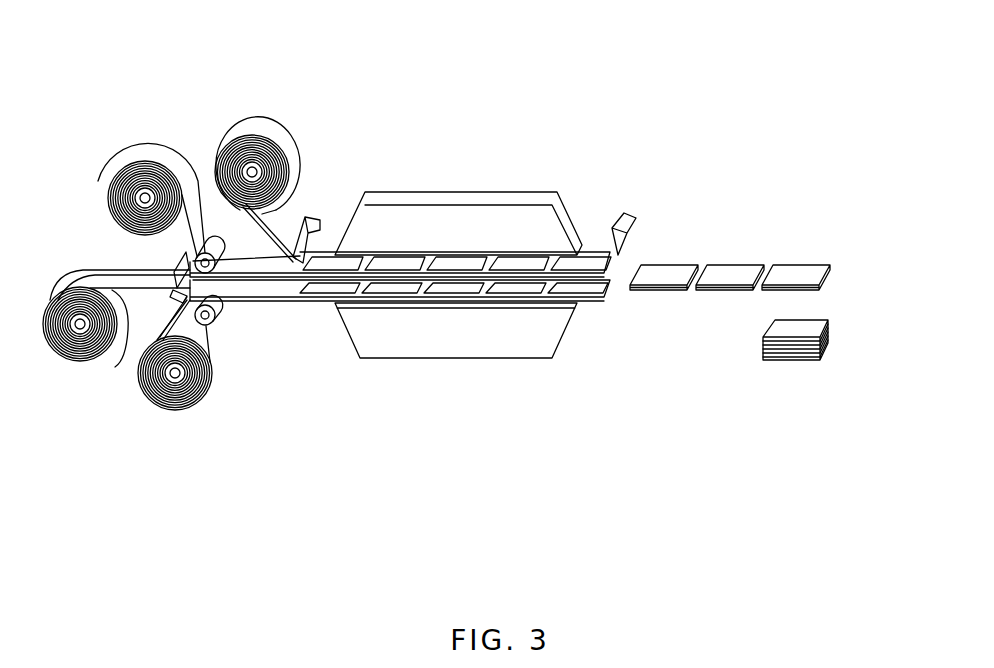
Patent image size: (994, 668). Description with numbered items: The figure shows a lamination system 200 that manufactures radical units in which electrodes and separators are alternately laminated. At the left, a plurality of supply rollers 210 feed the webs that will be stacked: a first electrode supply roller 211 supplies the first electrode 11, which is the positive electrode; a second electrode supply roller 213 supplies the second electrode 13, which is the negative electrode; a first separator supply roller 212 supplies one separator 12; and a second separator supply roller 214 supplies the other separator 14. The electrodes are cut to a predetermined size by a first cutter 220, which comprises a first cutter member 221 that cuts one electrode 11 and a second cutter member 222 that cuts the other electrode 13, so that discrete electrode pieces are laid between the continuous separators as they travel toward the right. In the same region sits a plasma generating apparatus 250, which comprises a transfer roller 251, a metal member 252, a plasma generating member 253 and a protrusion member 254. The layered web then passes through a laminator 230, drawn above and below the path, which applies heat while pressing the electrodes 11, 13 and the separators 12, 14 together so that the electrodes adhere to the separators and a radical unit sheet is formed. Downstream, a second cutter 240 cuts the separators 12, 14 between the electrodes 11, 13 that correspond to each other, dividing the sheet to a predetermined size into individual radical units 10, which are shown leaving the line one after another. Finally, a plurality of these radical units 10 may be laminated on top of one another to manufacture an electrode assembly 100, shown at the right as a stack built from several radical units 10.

The radical unit 10 is at (806, 258).
The first electrode 11 is at (267, 128).
The first separator 12 is at (162, 177).
The second electrode 13 is at (60, 343).
The second separator 14 is at (170, 397).
The electrode assembly 100 is at (898, 300).
The lamination system 200 is at (617, 104).
The supply rollers 210 is at (43, 62).
The first electrode supply roller 211 is at (252, 172).
The first separator supply roller 212 is at (145, 197).
The second electrode supply roller 213 is at (80, 324).
The second separator supply roller 214 is at (173, 373).
The first cutter 220 is at (388, 115).
The first cutter member 221 is at (314, 218).
The second cutter member 222 is at (221, 241).
The laminator 230 is at (482, 325).
The second cutter 240 is at (626, 213).
The plasma generating apparatus 250 is at (387, 447).
The transfer roller 251 is at (190, 287).
The metal member 252 is at (200, 297).
The plasma generating member 253 is at (212, 325).
The protrusion member 254 is at (218, 265).